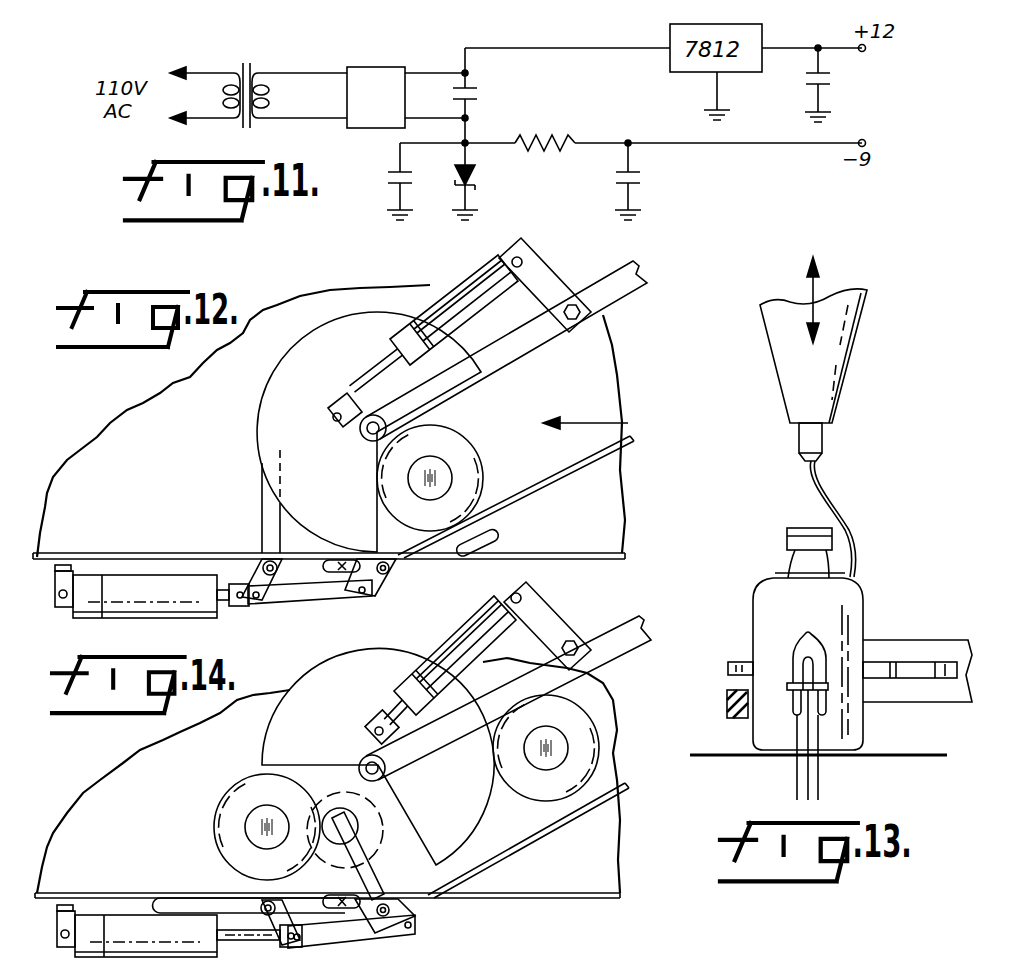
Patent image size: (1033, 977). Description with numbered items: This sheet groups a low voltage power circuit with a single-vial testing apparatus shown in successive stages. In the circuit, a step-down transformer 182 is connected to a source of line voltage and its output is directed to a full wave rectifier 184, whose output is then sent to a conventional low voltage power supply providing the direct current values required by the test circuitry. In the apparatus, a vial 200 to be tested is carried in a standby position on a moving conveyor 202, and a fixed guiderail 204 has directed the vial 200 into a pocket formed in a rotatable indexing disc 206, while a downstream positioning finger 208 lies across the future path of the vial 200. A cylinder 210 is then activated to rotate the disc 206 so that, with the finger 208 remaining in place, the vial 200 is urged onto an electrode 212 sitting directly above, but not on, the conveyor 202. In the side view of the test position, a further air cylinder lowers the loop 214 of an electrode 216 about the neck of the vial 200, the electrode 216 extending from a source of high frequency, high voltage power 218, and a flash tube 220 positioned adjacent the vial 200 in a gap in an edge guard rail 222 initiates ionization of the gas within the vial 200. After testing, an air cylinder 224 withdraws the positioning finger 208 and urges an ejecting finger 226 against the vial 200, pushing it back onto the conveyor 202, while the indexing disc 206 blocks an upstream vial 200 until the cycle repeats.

In FIG. 11, the step-down transformer 182 is at (250, 66).
In FIG. 11, the full wave rectifier 184 is at (376, 67).
In FIG. 12, the vial 200 is at (477, 480).
In FIG. 14, the vial 200 is at (602, 750).
In FIG. 13, the vial 200 is at (855, 600).
In FIG. 12, the moving conveyor 202 is at (630, 514).
In FIG. 14, the moving conveyor 202 is at (615, 872).
In FIG. 13, the moving conveyor 202 is at (918, 745).
In FIG. 12, the fixed guiderail 204 is at (533, 348).
In FIG. 14, the fixed guiderail 204 is at (647, 598).
In FIG. 13, the fixed guiderail 204 is at (955, 625).
In FIG. 12, the rotatable indexing disc 206 is at (280, 372).
In FIG. 14, the rotatable indexing disc 206 is at (315, 680).
In FIG. 13, the rotatable indexing disc 206 is at (735, 662).
In FIG. 12, the downstream positioning finger 208 is at (268, 508).
In FIG. 14, the downstream positioning finger 208 is at (205, 878).
In FIG. 13, the downstream positioning finger 208 is at (727, 708).
In FIG. 12, the cylinder 210 is at (468, 288).
In FIG. 14, the cylinder 210 is at (440, 648).
In FIG. 14, the electrode 212 is at (365, 820).
In FIG. 13, the electrode 212 is at (790, 757).
In FIG. 13, the loop 214 is at (778, 575).
In FIG. 13, the electrode 216 is at (840, 520).
In FIG. 13, the source of high frequency, high voltage power 218 is at (835, 395).
In FIG. 12, the flash tube 220 is at (354, 552).
In FIG. 14, the flash tube 220 is at (352, 910).
In FIG. 13, the flash tube 220 is at (795, 650).
In FIG. 12, the edge guard rail 222 is at (418, 566).
In FIG. 14, the edge guard rail 222 is at (428, 900).
In FIG. 12, the air cylinder 224 is at (140, 590).
In FIG. 14, the air cylinder 224 is at (118, 925).
In FIG. 12, the ejecting finger 226 is at (480, 545).
In FIG. 14, the ejecting finger 226 is at (340, 812).